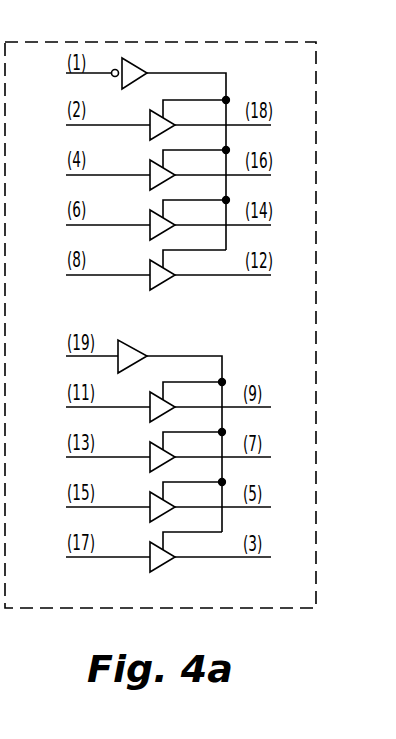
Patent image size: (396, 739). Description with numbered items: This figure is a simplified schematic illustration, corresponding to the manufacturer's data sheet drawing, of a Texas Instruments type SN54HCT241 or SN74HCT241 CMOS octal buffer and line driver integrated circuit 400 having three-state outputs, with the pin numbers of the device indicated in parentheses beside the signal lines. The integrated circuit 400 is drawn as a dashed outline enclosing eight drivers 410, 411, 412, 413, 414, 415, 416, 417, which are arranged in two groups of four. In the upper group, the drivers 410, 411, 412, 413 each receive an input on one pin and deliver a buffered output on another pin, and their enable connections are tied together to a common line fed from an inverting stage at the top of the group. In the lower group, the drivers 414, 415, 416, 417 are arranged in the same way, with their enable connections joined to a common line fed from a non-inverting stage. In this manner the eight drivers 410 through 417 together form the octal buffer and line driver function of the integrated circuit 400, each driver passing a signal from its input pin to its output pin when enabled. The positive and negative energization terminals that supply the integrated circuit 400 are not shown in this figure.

The octal buffer and line driver integrated circuit 400 is at (316, 306).
The driver 410 is at (151, 134).
The driver 411 is at (151, 184).
The driver 412 is at (151, 234).
The driver 413 is at (151, 284).
The driver 414 is at (153, 416).
The driver 415 is at (153, 466).
The driver 416 is at (153, 516).
The driver 417 is at (153, 566).